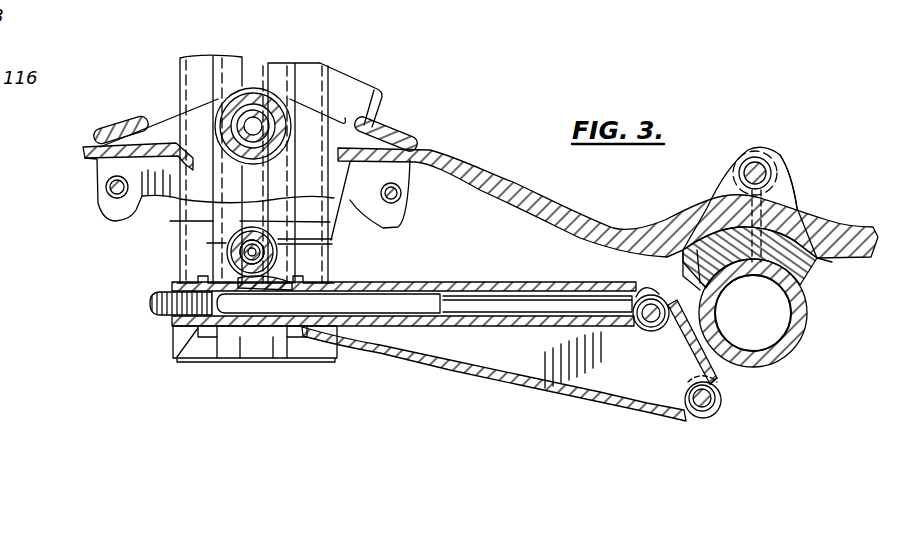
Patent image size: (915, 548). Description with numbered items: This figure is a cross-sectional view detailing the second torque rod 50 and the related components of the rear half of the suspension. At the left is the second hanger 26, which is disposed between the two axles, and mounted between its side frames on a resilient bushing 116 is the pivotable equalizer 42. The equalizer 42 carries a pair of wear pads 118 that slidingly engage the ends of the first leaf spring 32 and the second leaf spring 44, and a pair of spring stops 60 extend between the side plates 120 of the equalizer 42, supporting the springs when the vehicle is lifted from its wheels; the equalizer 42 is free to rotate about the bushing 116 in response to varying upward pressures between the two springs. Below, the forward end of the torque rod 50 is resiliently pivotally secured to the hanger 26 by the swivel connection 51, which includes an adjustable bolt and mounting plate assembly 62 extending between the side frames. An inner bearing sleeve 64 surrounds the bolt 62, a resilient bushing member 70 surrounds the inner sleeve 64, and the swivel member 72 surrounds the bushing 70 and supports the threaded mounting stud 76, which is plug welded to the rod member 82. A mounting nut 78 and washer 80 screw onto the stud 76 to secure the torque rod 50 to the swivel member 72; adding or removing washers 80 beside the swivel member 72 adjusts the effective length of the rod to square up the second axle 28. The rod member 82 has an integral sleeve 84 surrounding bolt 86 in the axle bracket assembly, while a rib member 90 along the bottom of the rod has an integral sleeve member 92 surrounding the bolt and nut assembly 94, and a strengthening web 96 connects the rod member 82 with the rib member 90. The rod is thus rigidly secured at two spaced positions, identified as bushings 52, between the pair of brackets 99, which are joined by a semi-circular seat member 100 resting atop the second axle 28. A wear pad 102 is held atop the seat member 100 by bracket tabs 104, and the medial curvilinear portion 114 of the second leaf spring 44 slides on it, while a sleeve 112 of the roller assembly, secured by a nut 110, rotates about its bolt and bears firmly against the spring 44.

The second hanger 26 is at (313, 63).
The second axle 28 is at (792, 347).
The first leaf spring 32 is at (85, 152).
The pivotable equalizer 42 is at (337, 116).
The second leaf spring 44 is at (554, 204).
The second torque rod 50 is at (518, 280).
The swivel connection 51 is at (222, 248).
The bushings 52 is at (733, 390).
The spring stops 60 is at (103, 193).
The adjustable bolt and mounting plate assembly 62 is at (282, 256).
The inner bearing sleeve 64 is at (228, 262).
The resilient bushing member 70 is at (278, 244).
The swivel member 72 is at (230, 233).
The mounting stud 76 is at (361, 300).
The mounting nut 78 is at (172, 326).
The washer 80 is at (183, 358).
The rod member 82 is at (478, 284).
The integral sleeve 84 is at (646, 284).
The bolt 86 is at (642, 351).
The rib member 90 is at (478, 371).
The integral sleeve member 92 is at (722, 394).
The bolt and nut assembly 94 is at (650, 385).
The strengthening web 96 is at (465, 353).
The brackets 99 is at (788, 194).
The seat member 100 is at (810, 300).
The wear pad 102 is at (792, 247).
The bracket tabs 104 is at (669, 256).
The nut 110 is at (772, 166).
The sleeve 112 is at (755, 158).
The medial curvilinear portion 114 is at (733, 198).
The resilient bushing 116 is at (250, 86).
The wear pads 118 is at (125, 125).
The side plates 120 is at (106, 214).